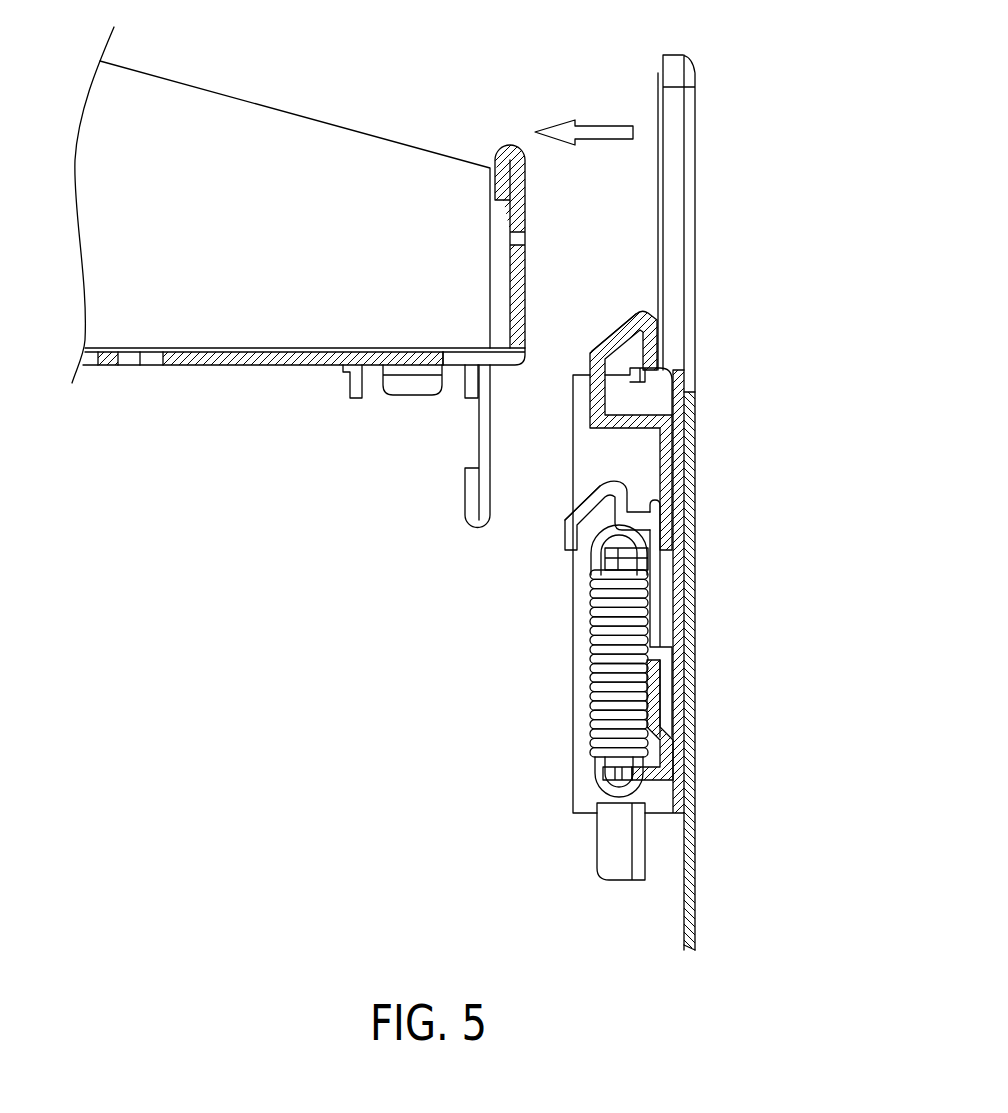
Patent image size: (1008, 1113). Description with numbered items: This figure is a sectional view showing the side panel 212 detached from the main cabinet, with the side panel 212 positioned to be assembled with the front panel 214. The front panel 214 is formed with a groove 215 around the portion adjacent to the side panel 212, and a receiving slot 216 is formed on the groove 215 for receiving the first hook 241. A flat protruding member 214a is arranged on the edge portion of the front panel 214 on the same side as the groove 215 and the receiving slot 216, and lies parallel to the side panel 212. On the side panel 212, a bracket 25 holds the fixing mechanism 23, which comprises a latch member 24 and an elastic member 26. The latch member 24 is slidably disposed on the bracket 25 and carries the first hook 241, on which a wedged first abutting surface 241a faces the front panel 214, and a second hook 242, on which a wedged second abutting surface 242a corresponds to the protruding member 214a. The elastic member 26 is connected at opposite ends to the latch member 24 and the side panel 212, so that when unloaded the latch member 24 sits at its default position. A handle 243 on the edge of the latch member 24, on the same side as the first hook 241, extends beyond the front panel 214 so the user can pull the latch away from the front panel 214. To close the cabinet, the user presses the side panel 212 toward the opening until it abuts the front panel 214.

The front panel 214 is at (308, 362).
The receiving slot 216 is at (458, 358).
The groove 215 is at (514, 348).
The protruding member 214a is at (473, 490).
The handle 243 is at (670, 175).
The side panel 212 is at (693, 462).
The fixing mechanism 23 is at (634, 569).
The latch member 24 is at (607, 569).
The first hook 241 is at (660, 345).
The first abutting surface 241a is at (616, 335).
The second hook 242 is at (570, 537).
The second abutting surface 242a is at (546, 503).
The bracket 25 is at (692, 392).
The elastic member 26 is at (592, 712).